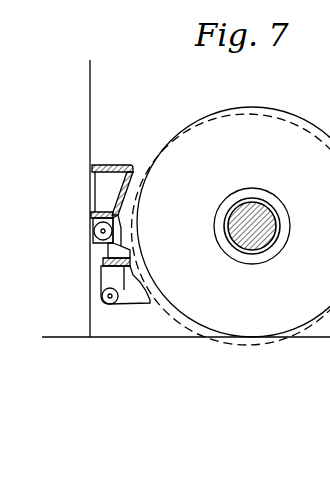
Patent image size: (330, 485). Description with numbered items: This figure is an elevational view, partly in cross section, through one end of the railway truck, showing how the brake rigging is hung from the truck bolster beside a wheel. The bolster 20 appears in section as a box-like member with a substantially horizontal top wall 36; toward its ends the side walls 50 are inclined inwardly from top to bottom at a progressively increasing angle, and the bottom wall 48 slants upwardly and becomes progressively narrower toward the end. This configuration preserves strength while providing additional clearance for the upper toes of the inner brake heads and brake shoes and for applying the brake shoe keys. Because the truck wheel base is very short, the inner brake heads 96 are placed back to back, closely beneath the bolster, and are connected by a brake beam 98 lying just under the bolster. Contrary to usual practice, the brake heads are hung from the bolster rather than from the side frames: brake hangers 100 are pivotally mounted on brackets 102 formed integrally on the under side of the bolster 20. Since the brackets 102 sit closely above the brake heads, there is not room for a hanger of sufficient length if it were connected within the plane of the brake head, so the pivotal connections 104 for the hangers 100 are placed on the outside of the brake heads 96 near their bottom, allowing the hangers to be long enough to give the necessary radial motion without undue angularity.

The bolster 20 is at (120, 161).
The top wall 36 is at (104, 164).
The side walls 50 is at (141, 182).
The brackets 102 is at (118, 212).
The bottom walls 48 is at (72, 232).
The brake hangers 100 is at (107, 249).
The brake beam 98 is at (103, 265).
The pivotal connections 104 is at (102, 297).
The inner brake heads 96 is at (96, 298).